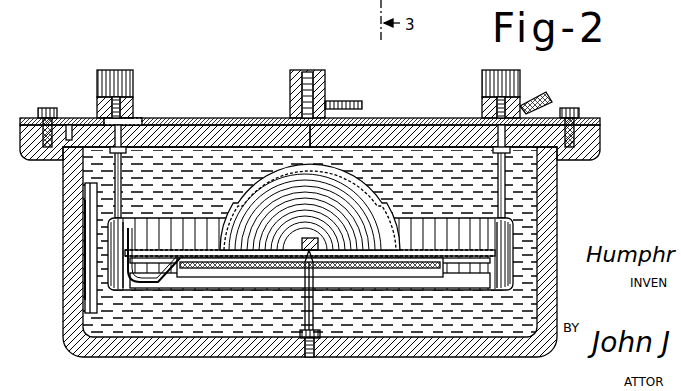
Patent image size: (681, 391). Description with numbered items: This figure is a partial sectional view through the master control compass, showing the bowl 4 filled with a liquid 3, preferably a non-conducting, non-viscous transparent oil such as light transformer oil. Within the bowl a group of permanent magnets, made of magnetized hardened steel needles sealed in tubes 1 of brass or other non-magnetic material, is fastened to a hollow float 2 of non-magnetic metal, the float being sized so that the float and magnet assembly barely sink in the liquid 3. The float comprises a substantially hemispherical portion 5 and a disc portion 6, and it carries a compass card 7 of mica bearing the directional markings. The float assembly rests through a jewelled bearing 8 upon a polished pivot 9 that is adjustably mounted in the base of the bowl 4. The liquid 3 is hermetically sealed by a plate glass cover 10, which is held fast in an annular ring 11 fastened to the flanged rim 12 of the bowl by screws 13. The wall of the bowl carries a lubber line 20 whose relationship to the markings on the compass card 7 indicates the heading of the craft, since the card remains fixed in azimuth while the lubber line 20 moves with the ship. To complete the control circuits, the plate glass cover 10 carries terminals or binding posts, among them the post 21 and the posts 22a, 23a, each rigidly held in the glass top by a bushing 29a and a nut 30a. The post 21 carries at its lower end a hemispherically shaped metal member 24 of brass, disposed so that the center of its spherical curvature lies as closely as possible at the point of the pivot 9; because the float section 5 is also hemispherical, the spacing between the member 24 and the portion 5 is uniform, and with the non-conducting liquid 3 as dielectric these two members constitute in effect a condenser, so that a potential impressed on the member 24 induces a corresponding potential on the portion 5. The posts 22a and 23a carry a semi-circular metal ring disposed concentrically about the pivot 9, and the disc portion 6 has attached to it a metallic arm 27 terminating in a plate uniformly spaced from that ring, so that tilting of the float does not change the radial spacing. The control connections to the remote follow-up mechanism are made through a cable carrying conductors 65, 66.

The tubes 1 is at (278, 268).
The hollow float 2 is at (346, 216).
The liquid 3 is at (193, 125).
The bowl 4 is at (86, 238).
The hemispherical portion 5 is at (380, 226).
The disc portion 6 is at (350, 258).
The compass card 7 is at (422, 240).
The jewelled bearing 8 is at (318, 248).
The polished pivot 9 is at (316, 263).
The plate glass cover 10 is at (214, 124).
The annular ring 11 is at (70, 118).
The flanged rim 12 is at (63, 155).
The screws 13 is at (40, 108).
The lubber line 20 is at (92, 262).
The binding post 21 is at (290, 92).
The binding post 22a is at (115, 196).
The binding post 23a is at (510, 200).
The hemispherically shaped metal member 24 is at (380, 132).
The metallic arm 27 is at (165, 282).
The bushing 29a is at (136, 126).
The nut 30a is at (133, 118).
The conductor 65 is at (352, 101).
The conductor 66 is at (548, 95).